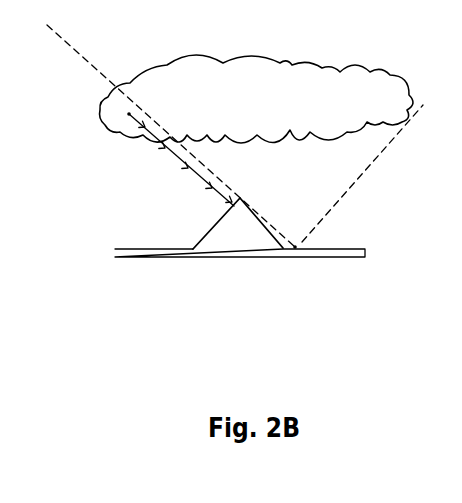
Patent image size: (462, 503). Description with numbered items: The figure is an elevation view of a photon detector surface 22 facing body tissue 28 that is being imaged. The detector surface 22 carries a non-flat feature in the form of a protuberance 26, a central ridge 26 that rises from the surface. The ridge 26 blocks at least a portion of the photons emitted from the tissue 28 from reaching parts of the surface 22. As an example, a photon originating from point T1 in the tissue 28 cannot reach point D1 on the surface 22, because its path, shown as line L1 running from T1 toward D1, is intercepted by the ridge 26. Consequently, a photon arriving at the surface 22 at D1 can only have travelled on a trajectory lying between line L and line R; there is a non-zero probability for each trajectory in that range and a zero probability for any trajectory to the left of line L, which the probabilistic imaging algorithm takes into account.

The detector surface 22 is at (133, 248).
The protuberance (central ridge) 26 is at (243, 196).
The body tissue 28 is at (278, 77).
The line L is at (163, 129).
The line R is at (367, 161).
The line L1 is at (177, 162).
The point T1 is at (128, 114).
The point D1 is at (289, 252).